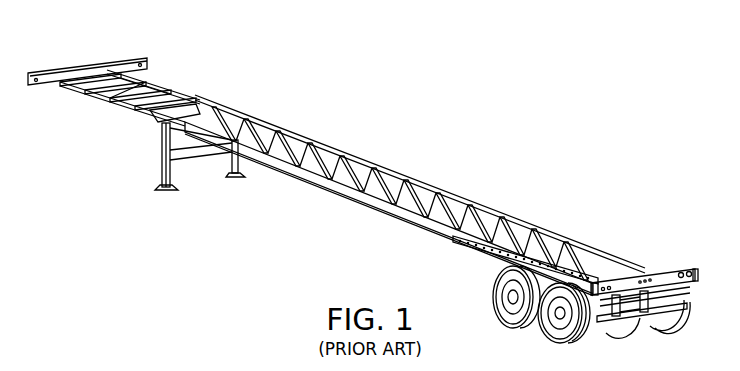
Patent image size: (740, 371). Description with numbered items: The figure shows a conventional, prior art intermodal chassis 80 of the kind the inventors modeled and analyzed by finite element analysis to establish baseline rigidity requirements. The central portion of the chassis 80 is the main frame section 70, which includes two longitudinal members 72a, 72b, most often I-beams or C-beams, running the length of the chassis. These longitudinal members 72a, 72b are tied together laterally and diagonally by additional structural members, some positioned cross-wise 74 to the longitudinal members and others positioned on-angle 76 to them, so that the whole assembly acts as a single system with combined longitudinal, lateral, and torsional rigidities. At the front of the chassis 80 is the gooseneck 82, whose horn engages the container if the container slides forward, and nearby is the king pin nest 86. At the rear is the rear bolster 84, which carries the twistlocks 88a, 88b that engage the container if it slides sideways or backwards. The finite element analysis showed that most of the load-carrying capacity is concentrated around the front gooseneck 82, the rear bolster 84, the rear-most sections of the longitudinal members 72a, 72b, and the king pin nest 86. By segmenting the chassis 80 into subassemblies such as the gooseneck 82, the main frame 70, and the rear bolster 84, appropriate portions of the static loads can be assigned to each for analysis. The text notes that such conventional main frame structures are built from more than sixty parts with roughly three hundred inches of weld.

The main frame section 70 is at (403, 166).
The longitudinal member 72a is at (352, 190).
The longitudinal member 72b is at (520, 210).
The cross-wise structural members 74 is at (351, 160).
The on-angle structural members 76 is at (503, 223).
The conventional chassis 80 is at (258, 49).
The front gooseneck 82 is at (88, 64).
The rear bolster 84 is at (684, 270).
The king pin nest 86 is at (127, 88).
The twistlock 88a is at (597, 283).
The twistlock 88b is at (695, 258).